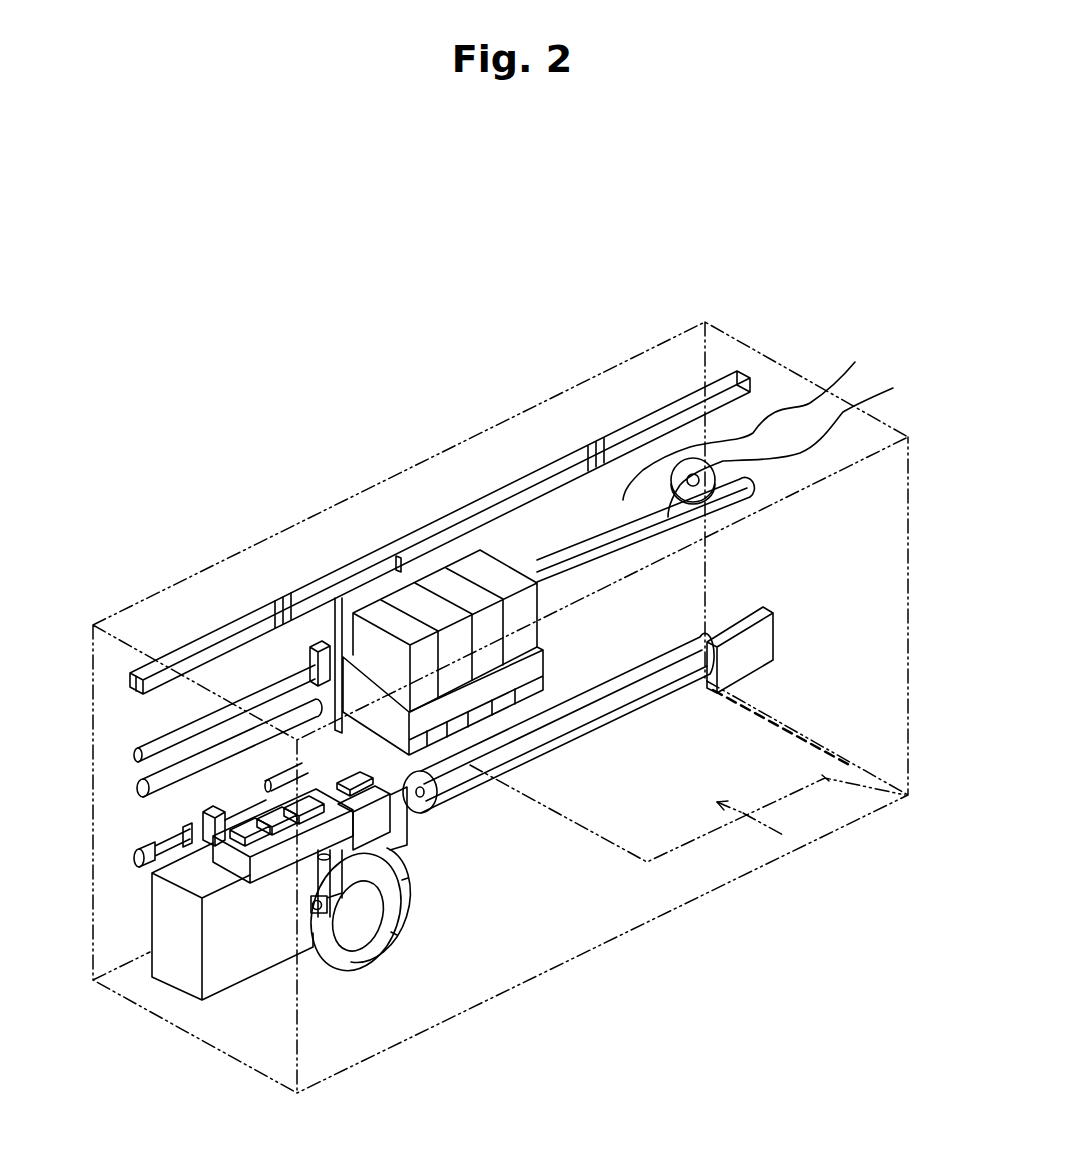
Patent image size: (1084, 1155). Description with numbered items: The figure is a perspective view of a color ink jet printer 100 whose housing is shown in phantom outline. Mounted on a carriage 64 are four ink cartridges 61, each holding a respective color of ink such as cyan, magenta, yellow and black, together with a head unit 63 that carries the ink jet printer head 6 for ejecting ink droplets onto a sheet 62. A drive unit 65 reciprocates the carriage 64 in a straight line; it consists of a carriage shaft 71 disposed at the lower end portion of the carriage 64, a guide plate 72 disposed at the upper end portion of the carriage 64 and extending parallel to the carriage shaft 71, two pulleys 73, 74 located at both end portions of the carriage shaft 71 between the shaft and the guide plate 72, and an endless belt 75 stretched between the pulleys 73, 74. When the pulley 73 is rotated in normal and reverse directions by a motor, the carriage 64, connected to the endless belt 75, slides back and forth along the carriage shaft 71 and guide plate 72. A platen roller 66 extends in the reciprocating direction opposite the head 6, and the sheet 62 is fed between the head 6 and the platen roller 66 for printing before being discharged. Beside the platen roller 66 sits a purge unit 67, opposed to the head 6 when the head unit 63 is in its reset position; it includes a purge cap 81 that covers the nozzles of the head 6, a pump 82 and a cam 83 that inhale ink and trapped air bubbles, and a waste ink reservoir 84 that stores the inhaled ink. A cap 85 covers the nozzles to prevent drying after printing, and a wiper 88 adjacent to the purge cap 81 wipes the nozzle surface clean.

The color ink jet printer 100 is at (359, 312).
The ink jet printer head 6 is at (555, 687).
The ink cartridges 61 is at (472, 565).
The sheet 62 is at (902, 800).
The head unit 63 is at (562, 627).
The carriage 64 is at (330, 620).
The drive unit 65 is at (750, 418).
The platen roller 66 is at (665, 640).
The purge unit 67 is at (316, 983).
The carriage shaft 71 is at (760, 482).
The guide plate 72 is at (633, 428).
The pulley 73 is at (798, 442).
The pulley 74 is at (132, 752).
The endless belt 75 is at (754, 426).
The purge cap 81 is at (345, 772).
The pump 82 is at (397, 945).
The cam 83 is at (397, 928).
The waste ink reservoir 84 is at (235, 977).
The cap 85 is at (227, 847).
The wiper 88 is at (377, 777).